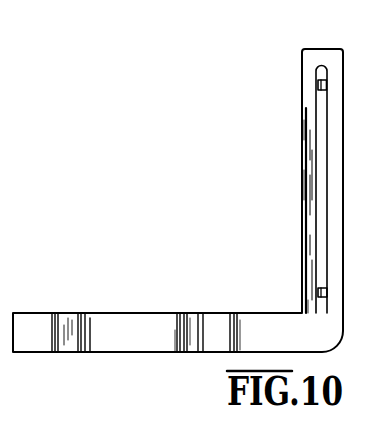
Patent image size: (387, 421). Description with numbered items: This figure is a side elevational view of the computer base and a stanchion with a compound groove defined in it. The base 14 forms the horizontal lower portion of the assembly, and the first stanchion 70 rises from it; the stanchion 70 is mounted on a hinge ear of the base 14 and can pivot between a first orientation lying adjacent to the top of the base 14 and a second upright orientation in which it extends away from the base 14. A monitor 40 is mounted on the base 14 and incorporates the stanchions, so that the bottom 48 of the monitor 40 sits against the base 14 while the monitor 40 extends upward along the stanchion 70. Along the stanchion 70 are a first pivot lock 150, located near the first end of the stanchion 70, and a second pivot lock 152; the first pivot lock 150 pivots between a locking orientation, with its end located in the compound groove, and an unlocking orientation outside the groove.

The base 14 is at (63, 320).
The bottom 48 is at (307, 49).
The monitor 40 is at (300, 103).
The first stanchion 70 is at (315, 131).
The first pivot lock 150 is at (318, 85).
The second pivot lock 152 is at (318, 292).